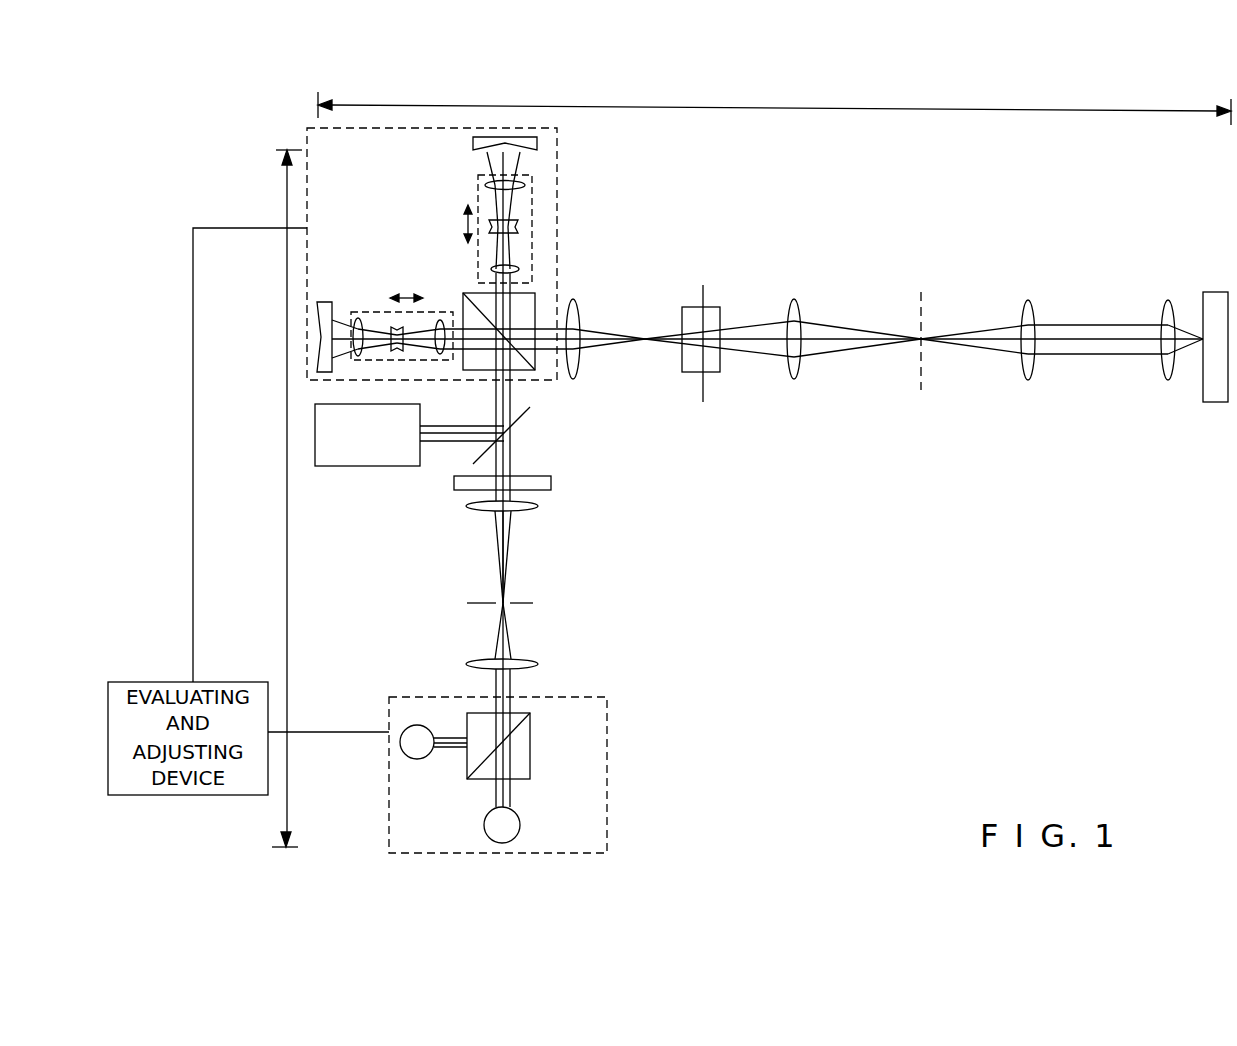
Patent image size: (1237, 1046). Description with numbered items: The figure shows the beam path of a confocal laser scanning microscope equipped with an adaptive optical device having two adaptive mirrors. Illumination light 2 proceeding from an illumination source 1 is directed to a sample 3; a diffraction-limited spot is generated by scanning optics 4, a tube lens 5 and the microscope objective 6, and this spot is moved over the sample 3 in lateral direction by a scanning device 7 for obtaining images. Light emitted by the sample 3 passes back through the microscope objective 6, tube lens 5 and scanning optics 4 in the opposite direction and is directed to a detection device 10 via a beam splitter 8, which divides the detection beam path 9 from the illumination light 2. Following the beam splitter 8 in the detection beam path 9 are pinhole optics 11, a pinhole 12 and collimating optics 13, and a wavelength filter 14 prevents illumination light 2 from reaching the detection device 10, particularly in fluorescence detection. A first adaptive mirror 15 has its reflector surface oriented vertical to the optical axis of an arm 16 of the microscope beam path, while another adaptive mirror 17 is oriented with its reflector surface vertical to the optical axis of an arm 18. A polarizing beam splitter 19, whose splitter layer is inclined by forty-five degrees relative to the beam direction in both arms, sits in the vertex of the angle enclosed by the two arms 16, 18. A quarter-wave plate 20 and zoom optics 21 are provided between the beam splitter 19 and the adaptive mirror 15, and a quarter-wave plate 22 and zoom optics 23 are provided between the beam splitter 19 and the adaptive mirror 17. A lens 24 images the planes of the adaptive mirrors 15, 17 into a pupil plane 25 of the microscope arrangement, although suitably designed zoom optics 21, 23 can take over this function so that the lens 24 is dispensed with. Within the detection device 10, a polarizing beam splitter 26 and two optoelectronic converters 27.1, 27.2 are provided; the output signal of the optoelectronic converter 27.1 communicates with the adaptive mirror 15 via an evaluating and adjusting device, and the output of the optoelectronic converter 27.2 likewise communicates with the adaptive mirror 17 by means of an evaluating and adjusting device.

The illumination source 1 is at (360, 466).
The illumination light 2 is at (455, 430).
The sample 3 is at (1220, 402).
The scanning optics 4 is at (797, 380).
The tube lens 5 is at (1030, 383).
The microscope objective 6 is at (1168, 383).
The scanning device 7 is at (712, 372).
The beam splitter 8 is at (473, 464).
The detection beam path 9 is at (495, 553).
The detection device 10 is at (607, 740).
The pinhole optics 11 is at (530, 508).
The pinhole 12 is at (533, 603).
The collimating optics 13 is at (537, 666).
The wavelength filter 14 is at (551, 482).
The first adaptive mirror 15 is at (473, 142).
The arm of the microscope beam path 16 is at (269, 498).
The adaptive mirror 17 is at (324, 302).
The arm of the microscope beam path 18 is at (774, 100).
The polarizing beam splitter 19 is at (540, 372).
The quarter-wave plate 20 is at (557, 300).
The zoom optics 21 is at (532, 200).
The quarter-wave plate 22 is at (463, 300).
The zoom optics 23 is at (370, 312).
The lens 24 is at (580, 322).
The pupil plane 25 is at (703, 290).
The polarizing beam splitter 26 is at (530, 738).
The optoelectronic converter 27.1 is at (520, 828).
The optoelectronic converter 27.2 is at (428, 759).